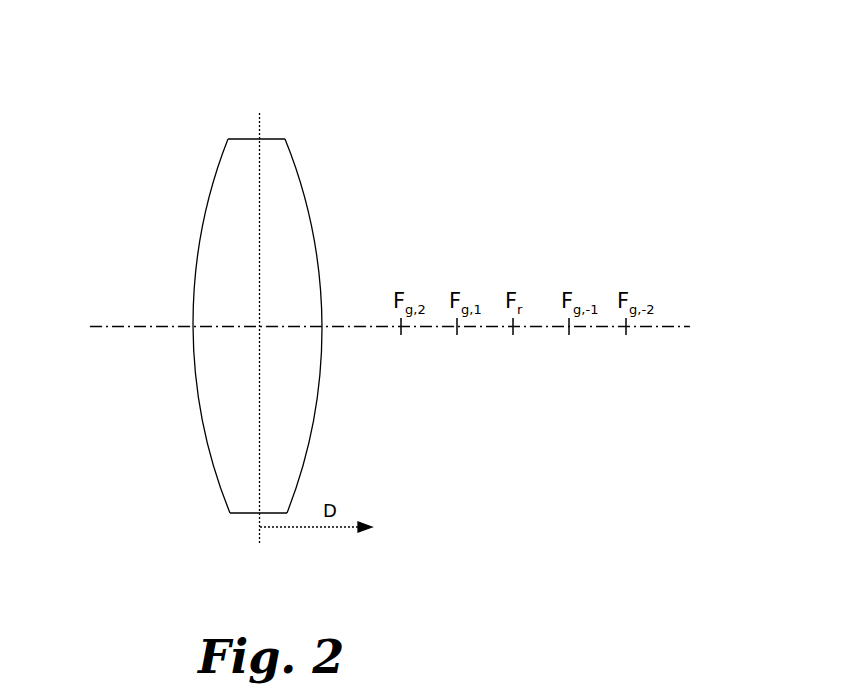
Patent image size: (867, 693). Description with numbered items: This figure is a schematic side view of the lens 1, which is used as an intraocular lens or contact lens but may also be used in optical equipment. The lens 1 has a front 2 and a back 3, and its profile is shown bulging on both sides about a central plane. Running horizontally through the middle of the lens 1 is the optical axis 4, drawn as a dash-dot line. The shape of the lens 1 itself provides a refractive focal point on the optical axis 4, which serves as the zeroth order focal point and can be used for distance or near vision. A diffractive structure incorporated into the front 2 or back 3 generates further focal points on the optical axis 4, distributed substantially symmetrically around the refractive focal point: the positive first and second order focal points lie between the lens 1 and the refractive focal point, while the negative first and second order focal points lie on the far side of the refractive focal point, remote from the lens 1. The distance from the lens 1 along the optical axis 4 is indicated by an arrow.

The lens 1 is at (295, 313).
The front 2 is at (318, 266).
The back 3 is at (195, 263).
The optical axis 4 is at (142, 325).